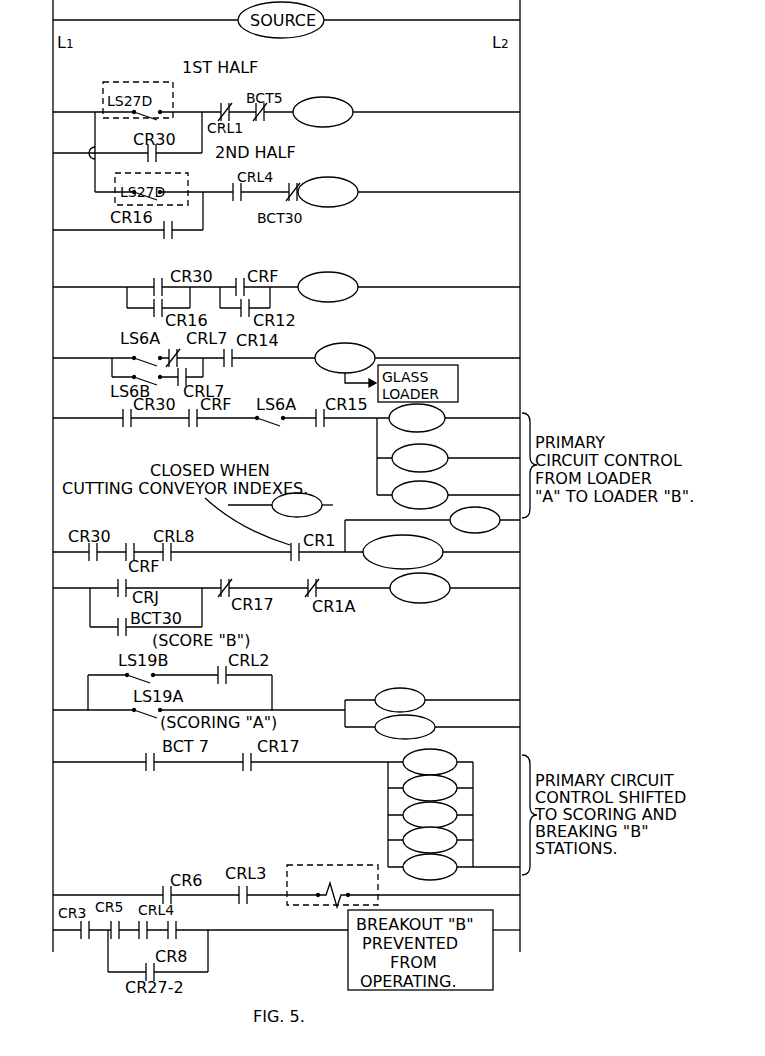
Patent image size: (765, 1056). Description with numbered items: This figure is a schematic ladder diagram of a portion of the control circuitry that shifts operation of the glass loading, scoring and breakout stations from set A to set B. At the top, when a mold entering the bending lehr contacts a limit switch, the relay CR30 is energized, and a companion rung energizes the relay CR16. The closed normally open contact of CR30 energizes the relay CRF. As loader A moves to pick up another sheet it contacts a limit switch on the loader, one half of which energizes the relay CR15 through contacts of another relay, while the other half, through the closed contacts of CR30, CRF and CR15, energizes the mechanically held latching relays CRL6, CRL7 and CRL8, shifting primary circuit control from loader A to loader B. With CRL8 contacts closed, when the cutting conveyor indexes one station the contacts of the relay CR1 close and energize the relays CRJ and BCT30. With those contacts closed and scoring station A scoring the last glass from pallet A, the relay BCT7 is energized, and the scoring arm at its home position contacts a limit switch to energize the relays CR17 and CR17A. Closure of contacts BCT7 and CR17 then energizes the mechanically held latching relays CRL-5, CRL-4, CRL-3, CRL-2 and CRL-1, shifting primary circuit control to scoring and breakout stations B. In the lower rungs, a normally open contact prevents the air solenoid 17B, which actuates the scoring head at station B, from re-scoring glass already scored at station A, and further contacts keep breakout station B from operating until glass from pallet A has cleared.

The air solenoid 17B is at (330, 877).
The relay CR-30 CR30 is at (323, 112).
The relay CR-16 CR16 is at (328, 192).
The relay CRF is at (328, 287).
The relay CR-15 CR15 is at (345, 358).
The latching relay CRL-6 CRL6 is at (417, 418).
The latching relay CRL-7 CRL7 is at (420, 458).
The latching relay CRL-8 CRL8 is at (420, 495).
The relay CRJ is at (475, 520).
The relay CR-1 CR1 is at (297, 505).
The relay BCT-30 BCT30 is at (403, 552).
The relay BCT-7 BCT7 is at (420, 588).
The relay CR-17 CR17 is at (400, 700).
The relay CR-17-A CR17A is at (405, 727).
The latching relay CRL-5 is at (430, 762).
The latching relay CRL-4 is at (430, 788).
The latching relay CRL-3 is at (430, 815).
The latching relay CRL-2 is at (430, 840).
The latching relay CRL-1 is at (430, 867).